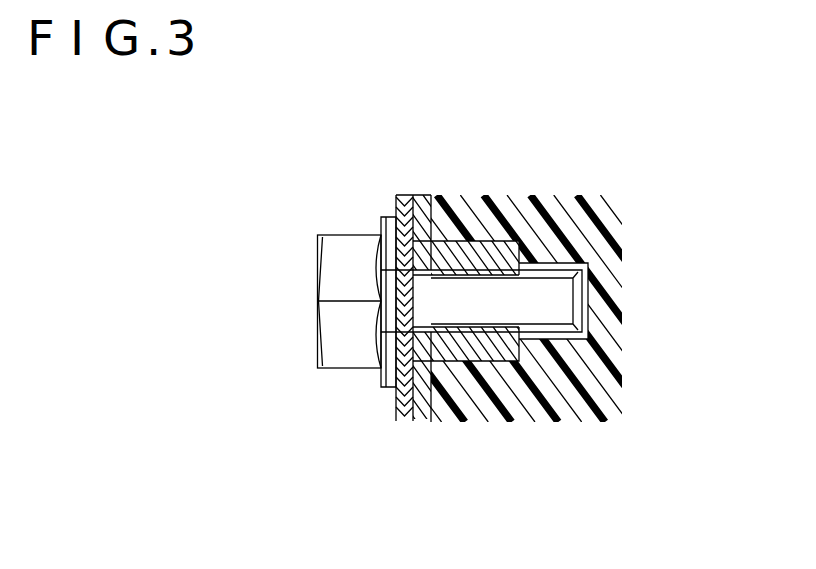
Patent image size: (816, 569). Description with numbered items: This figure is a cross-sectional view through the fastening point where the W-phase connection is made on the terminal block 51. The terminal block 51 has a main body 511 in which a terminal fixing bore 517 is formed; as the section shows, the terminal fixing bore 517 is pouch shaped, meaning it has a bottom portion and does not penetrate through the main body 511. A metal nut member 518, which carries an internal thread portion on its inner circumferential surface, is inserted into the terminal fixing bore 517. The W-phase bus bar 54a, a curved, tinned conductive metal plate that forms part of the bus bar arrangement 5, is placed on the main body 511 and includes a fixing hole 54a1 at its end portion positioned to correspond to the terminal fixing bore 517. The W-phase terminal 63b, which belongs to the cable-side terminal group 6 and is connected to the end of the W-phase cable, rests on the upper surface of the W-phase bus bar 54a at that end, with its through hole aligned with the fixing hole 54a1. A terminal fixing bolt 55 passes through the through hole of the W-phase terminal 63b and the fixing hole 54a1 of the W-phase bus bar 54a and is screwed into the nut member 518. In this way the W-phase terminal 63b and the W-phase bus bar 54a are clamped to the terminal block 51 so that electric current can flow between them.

The terminal block 51 is at (521, 244).
The main body 511 is at (567, 200).
The terminal fixing bore 517 is at (562, 268).
The nut member 518 is at (458, 248).
The W-phase bus bar 54a is at (468, 376).
The plate member 5 is at (413, 308).
The fixing hole 54a1 is at (434, 327).
The terminal fixing bolt 55 is at (333, 268).
The W-phase terminal 63b is at (306, 360).
The elastic member 6 is at (385, 386).